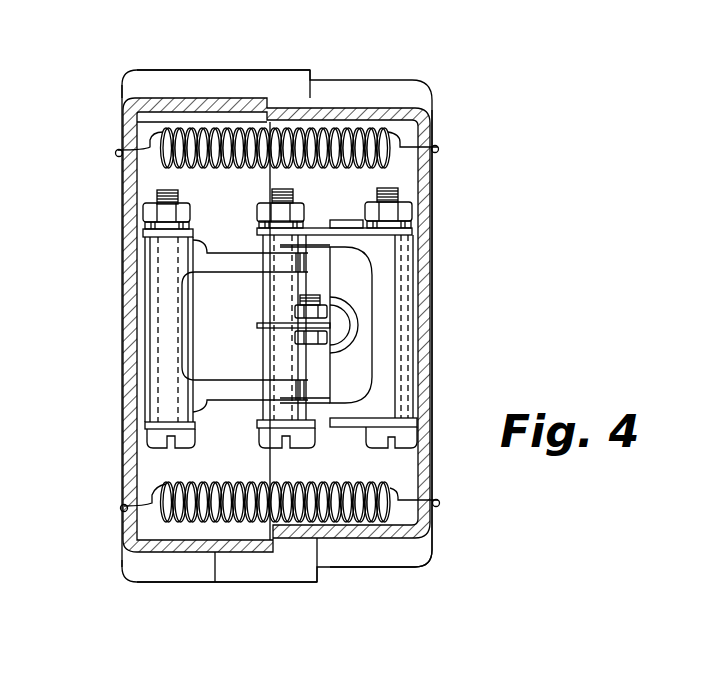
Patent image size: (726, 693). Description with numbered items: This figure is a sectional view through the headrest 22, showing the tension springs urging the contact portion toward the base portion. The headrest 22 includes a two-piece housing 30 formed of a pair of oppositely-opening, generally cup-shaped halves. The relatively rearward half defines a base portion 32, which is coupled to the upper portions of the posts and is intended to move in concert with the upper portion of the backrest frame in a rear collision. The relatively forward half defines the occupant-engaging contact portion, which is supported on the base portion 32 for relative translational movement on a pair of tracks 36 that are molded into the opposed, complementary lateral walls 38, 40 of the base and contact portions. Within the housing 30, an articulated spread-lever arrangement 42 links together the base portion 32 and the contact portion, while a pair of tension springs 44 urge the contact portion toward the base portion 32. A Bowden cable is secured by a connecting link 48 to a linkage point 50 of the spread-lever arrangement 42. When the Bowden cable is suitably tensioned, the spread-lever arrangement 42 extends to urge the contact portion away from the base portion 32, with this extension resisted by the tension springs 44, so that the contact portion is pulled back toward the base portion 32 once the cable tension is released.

The headrest 22 is at (456, 263).
The two-piece housing 30 is at (240, 68).
The base portion 32 is at (403, 567).
The tracks 36 is at (328, 562).
The lateral wall 38 is at (363, 537).
The lateral wall 40 is at (215, 582).
The articulated spread-lever arrangement 42 is at (167, 398).
The tension springs 44 is at (120, 153).
The connecting link 48 is at (258, 326).
The linkage point 50 is at (294, 337).